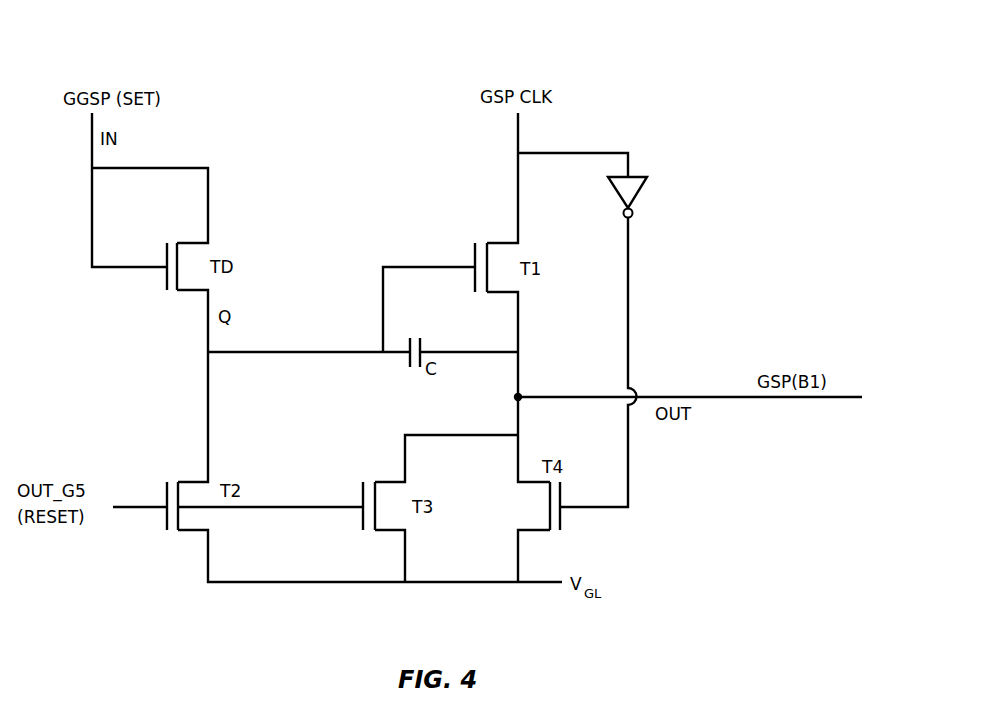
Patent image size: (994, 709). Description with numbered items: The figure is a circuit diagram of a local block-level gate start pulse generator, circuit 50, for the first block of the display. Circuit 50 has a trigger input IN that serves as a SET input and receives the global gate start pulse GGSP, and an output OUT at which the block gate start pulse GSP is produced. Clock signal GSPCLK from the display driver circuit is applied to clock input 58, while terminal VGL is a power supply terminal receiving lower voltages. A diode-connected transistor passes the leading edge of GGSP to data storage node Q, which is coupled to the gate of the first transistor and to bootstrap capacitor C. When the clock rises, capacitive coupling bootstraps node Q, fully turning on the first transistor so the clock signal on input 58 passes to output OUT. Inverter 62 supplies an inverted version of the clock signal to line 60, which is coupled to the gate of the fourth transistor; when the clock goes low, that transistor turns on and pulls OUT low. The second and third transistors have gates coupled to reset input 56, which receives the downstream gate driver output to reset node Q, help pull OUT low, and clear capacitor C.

The circuit 50 is at (727, 63).
The reset input 56 is at (143, 508).
The clock input 58 is at (517, 133).
The line 60 is at (629, 288).
The inverter 62 is at (649, 199).